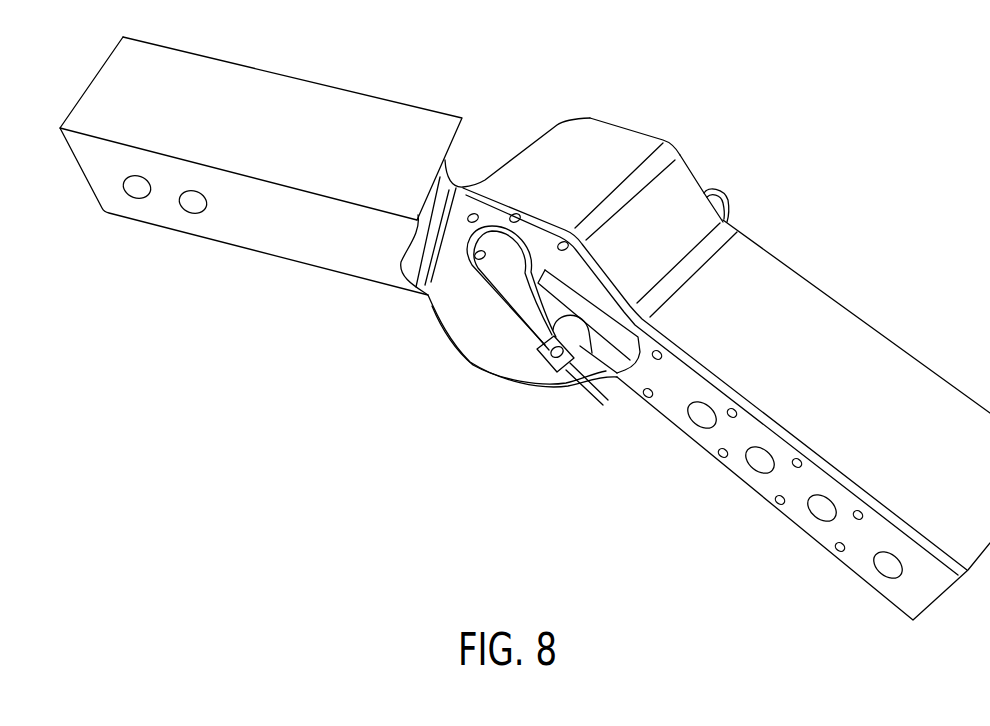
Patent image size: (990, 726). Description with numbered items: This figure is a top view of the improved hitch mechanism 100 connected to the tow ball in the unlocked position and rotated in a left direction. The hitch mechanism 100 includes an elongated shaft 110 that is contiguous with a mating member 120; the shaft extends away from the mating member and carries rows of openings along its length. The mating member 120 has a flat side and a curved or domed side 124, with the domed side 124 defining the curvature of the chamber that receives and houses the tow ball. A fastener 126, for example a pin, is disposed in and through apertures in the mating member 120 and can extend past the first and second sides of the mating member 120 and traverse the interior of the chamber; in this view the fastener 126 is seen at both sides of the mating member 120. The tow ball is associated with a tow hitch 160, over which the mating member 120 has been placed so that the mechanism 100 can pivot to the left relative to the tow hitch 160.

The hitch mechanism 100 is at (872, 161).
The elongated shaft 110 is at (783, 515).
The mating member 120 is at (584, 90).
The domed side 124 is at (653, 142).
The fastener 126 is at (730, 197).
The tow hitch 160 is at (468, 345).